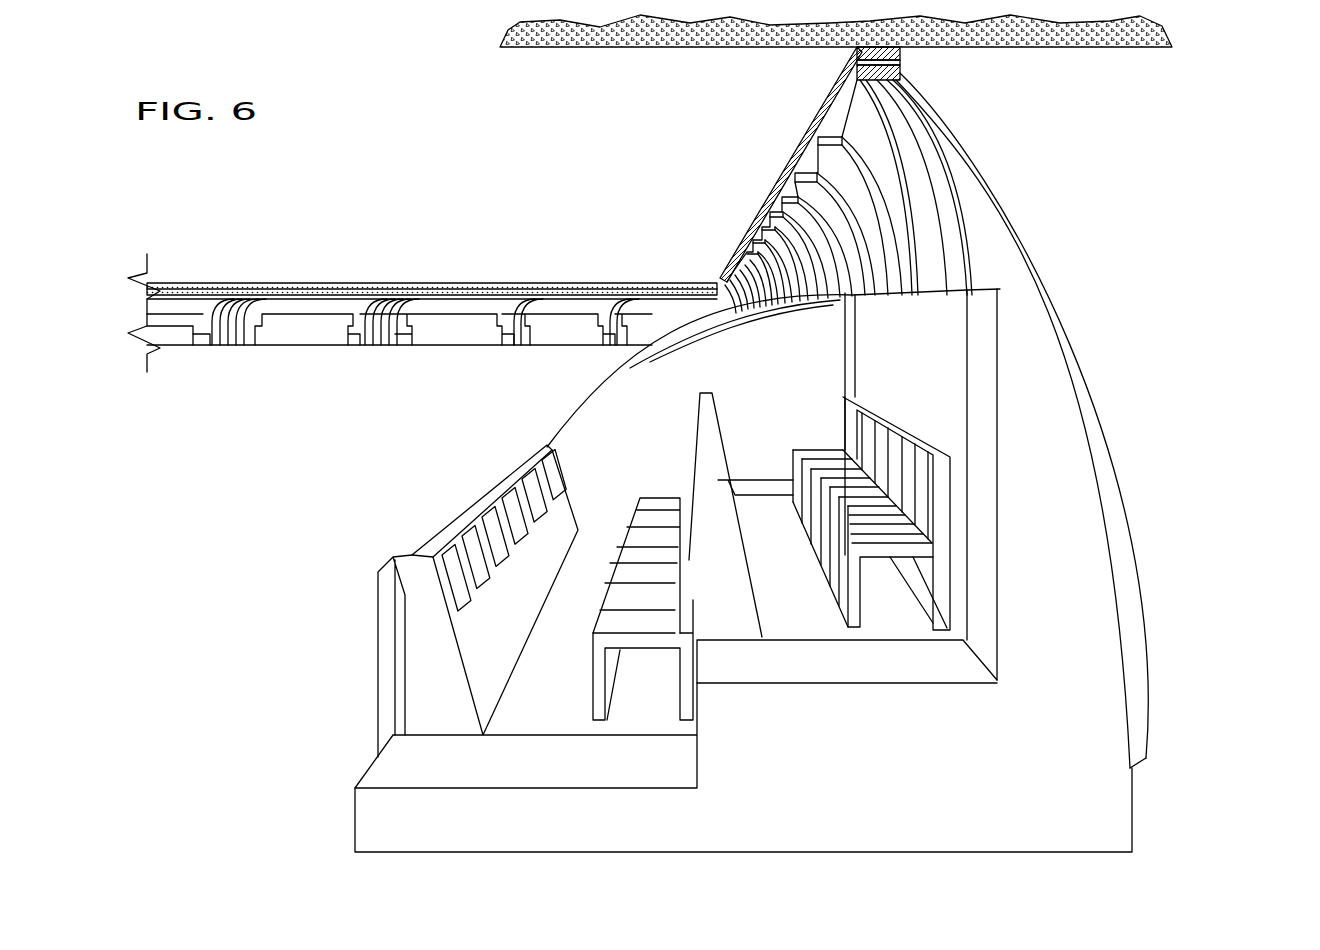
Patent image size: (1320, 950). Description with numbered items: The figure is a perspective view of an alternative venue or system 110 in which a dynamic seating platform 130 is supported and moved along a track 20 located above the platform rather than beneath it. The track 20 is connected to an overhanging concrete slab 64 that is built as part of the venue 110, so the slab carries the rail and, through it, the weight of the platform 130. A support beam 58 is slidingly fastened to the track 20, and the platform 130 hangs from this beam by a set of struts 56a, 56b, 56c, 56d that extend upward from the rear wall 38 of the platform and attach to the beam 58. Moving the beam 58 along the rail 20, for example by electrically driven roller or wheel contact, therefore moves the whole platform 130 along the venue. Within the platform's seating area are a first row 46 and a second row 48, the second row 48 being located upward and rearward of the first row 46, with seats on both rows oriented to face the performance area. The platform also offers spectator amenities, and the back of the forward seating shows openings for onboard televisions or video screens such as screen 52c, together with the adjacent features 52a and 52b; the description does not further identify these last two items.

The track 20 is at (900, 53).
The support beam 58 is at (900, 72).
The concrete slab 64 is at (1165, 47).
The strut 56a is at (1013, 270).
The strut 56b is at (925, 258).
The strut 56c is at (862, 230).
The strut 56d is at (850, 197).
The alternative venue or system 110 is at (1250, 263).
The rear wall 38 is at (895, 370).
The second row 48 is at (777, 608).
The first row 46 is at (536, 702).
The slot 52a is at (457, 578).
The slot 52b is at (475, 548).
The television or video screen 52c is at (493, 530).
The alternative platform 130 is at (1133, 812).